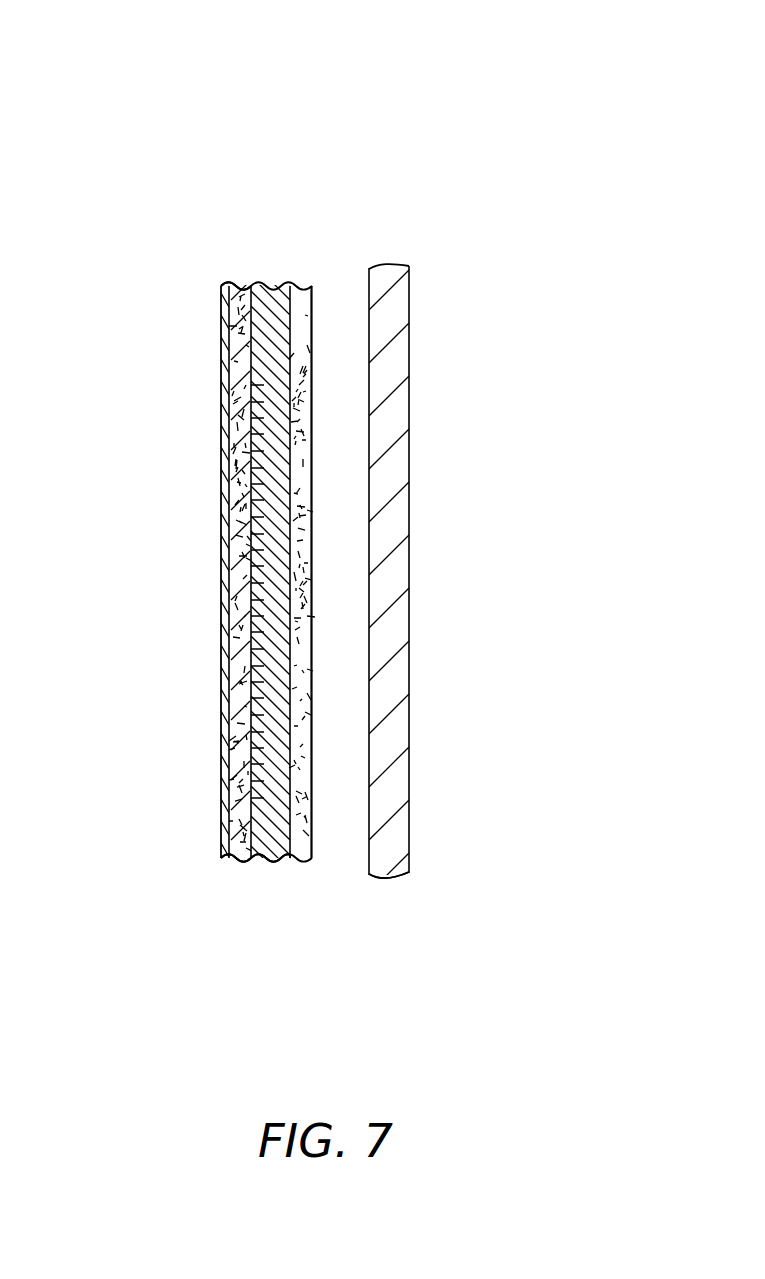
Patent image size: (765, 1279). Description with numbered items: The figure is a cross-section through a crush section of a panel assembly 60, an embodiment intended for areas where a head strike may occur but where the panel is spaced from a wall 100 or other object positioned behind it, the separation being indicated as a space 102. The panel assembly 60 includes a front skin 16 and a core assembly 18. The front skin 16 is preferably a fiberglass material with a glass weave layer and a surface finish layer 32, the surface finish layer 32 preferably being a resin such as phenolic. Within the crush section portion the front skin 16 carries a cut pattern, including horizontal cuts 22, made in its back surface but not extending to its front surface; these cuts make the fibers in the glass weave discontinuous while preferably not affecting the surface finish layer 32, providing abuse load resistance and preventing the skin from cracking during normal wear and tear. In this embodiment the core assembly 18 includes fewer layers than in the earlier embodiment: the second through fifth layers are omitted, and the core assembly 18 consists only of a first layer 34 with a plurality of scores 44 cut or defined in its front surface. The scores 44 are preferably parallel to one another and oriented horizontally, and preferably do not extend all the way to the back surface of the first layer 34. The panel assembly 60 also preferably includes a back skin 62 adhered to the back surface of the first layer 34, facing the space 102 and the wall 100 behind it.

The panel assembly 60 is at (138, 164).
The front skin 16 is at (241, 242).
The core assembly 18 is at (240, 880).
The back skin 62 is at (302, 287).
The scores 44 is at (258, 383).
The surface finish layer 32 is at (222, 370).
The horizontal cuts 22 is at (243, 732).
The first layer 34 is at (268, 843).
The wall 100 is at (388, 312).
The space 102 is at (340, 840).